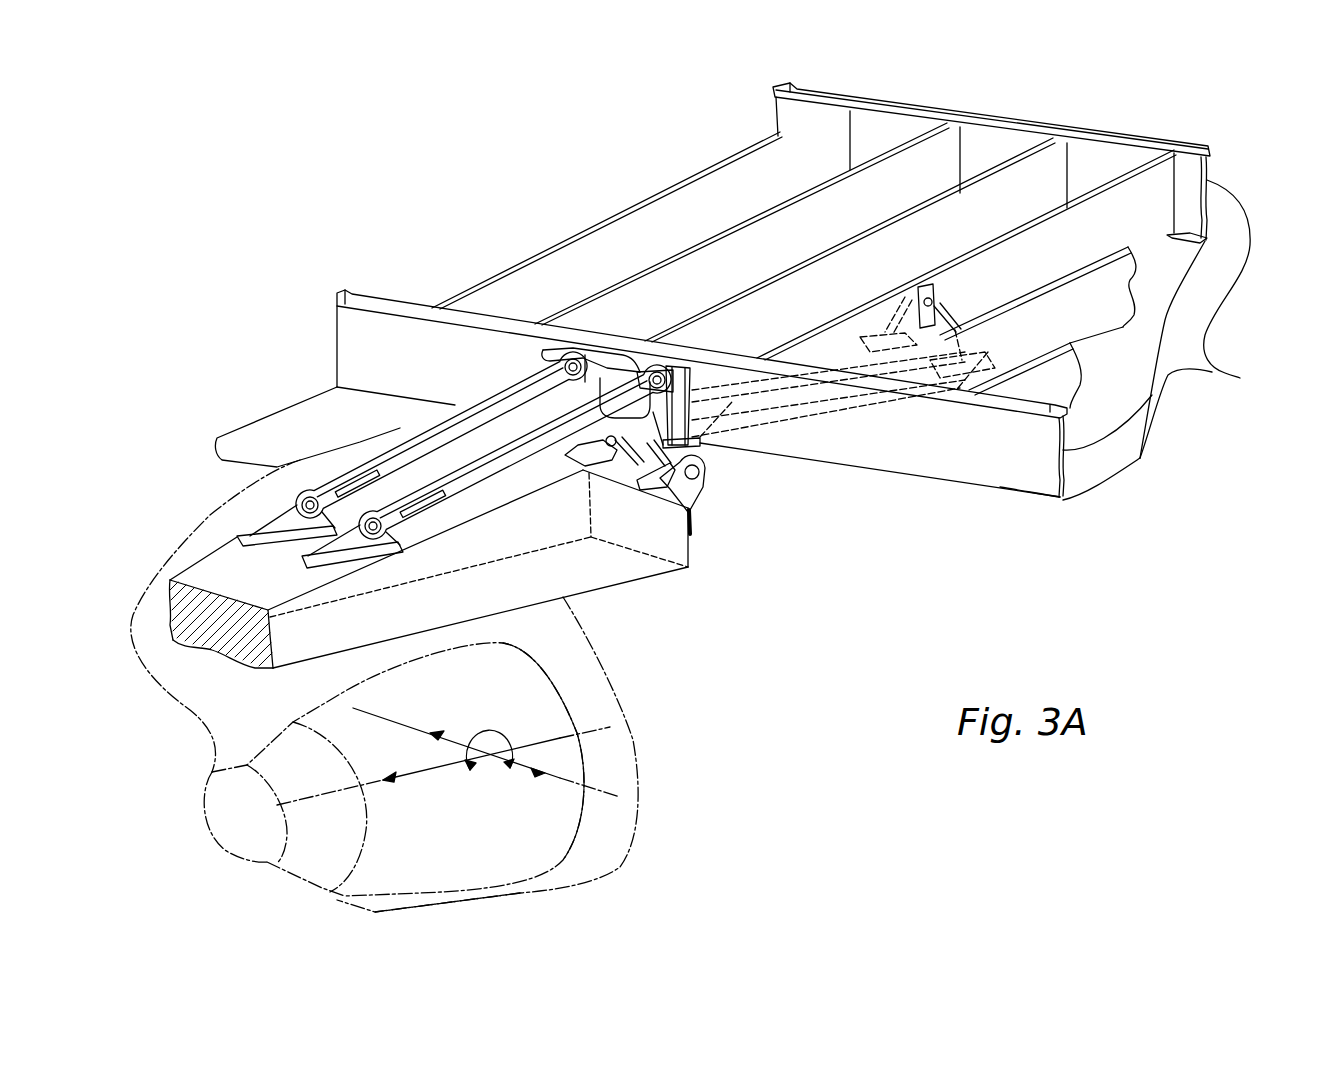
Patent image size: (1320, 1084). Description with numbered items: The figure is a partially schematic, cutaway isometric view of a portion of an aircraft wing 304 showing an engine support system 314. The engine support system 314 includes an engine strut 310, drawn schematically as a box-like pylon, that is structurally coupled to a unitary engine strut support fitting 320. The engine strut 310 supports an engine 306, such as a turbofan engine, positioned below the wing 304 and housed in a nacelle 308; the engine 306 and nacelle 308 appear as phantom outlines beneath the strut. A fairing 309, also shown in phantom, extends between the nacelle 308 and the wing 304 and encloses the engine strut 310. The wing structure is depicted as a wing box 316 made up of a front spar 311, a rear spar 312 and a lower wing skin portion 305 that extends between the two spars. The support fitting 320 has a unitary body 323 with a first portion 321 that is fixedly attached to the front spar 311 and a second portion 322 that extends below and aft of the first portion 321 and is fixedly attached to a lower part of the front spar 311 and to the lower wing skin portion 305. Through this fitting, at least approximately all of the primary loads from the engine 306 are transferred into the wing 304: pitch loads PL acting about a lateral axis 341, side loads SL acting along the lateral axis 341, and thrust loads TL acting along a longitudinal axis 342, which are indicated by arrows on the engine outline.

The aircraft wing 304 is at (1090, 487).
The lower wing skin portion 305 is at (1117, 455).
The engine 306 is at (622, 867).
The nacelle 308 is at (645, 738).
The fairing 309 is at (193, 537).
The engine strut 310 is at (517, 610).
The front spar 311 is at (378, 292).
The rear spar 312 is at (897, 103).
The engine support system 314 is at (745, 490).
The wing box 316 is at (1240, 378).
The engine strut support fitting 320 is at (712, 470).
The first portion 321 is at (527, 374).
The second portion 322 is at (737, 463).
The unitary body 323 is at (583, 349).
The lateral axis 341 is at (568, 778).
The longitudinal axis 342 is at (583, 730).
The thrust loads TL is at (403, 770).
The side loads SL is at (460, 738).
The pitch loads PL is at (510, 722).